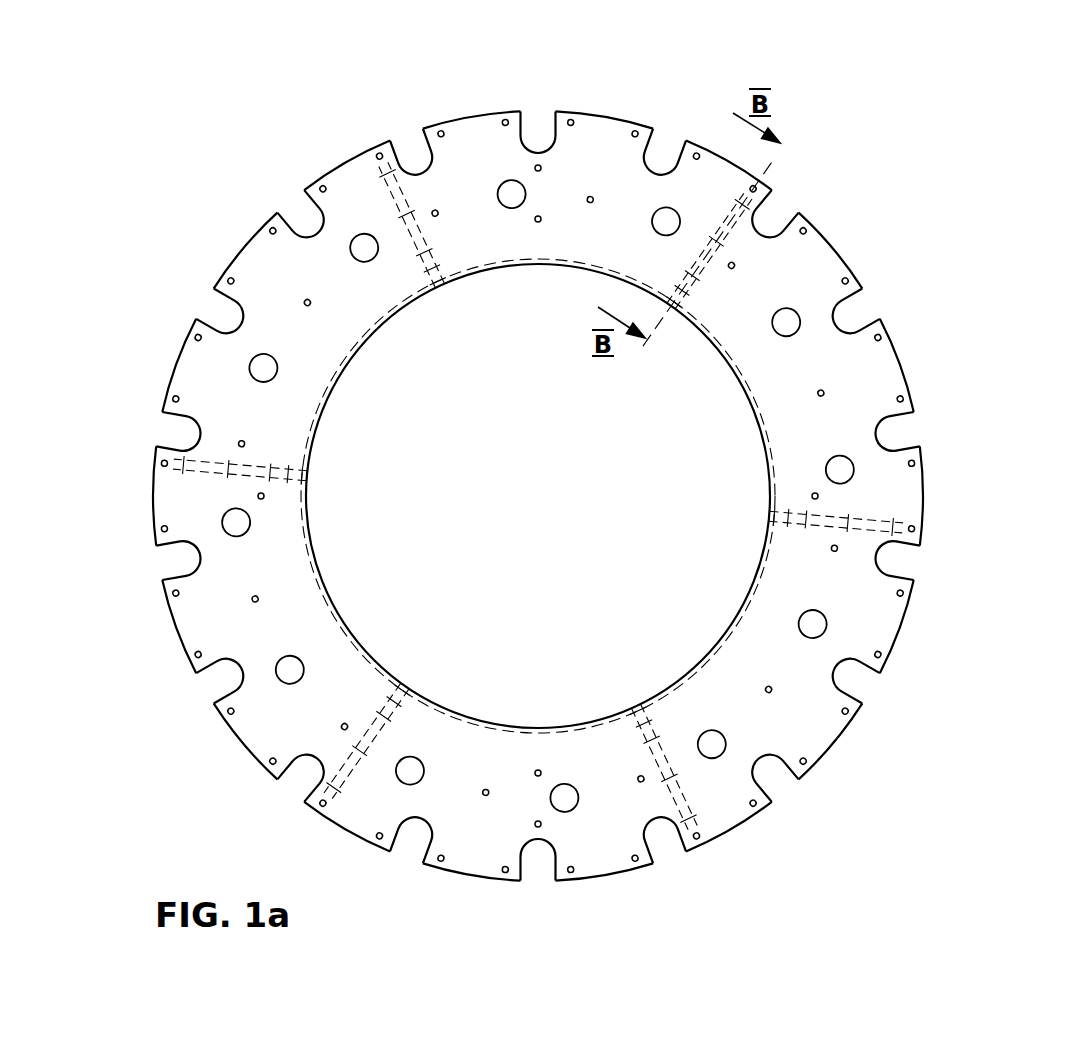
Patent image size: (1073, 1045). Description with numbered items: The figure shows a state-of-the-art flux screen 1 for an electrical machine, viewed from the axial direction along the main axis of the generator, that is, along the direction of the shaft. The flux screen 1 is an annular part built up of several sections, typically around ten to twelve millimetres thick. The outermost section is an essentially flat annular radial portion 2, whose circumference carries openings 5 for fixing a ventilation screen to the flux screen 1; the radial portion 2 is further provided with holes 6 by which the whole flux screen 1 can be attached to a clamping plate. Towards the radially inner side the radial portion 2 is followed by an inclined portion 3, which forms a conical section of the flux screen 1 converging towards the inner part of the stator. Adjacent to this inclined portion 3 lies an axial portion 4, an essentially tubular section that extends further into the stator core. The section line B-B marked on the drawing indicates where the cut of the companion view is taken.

The flux screen 1 is at (787, 728).
The radial portion 2 is at (810, 658).
The inclined portion 3 is at (772, 570).
The axial portion 4 is at (773, 488).
The openings 5 is at (853, 309).
The holes 6 is at (666, 220).